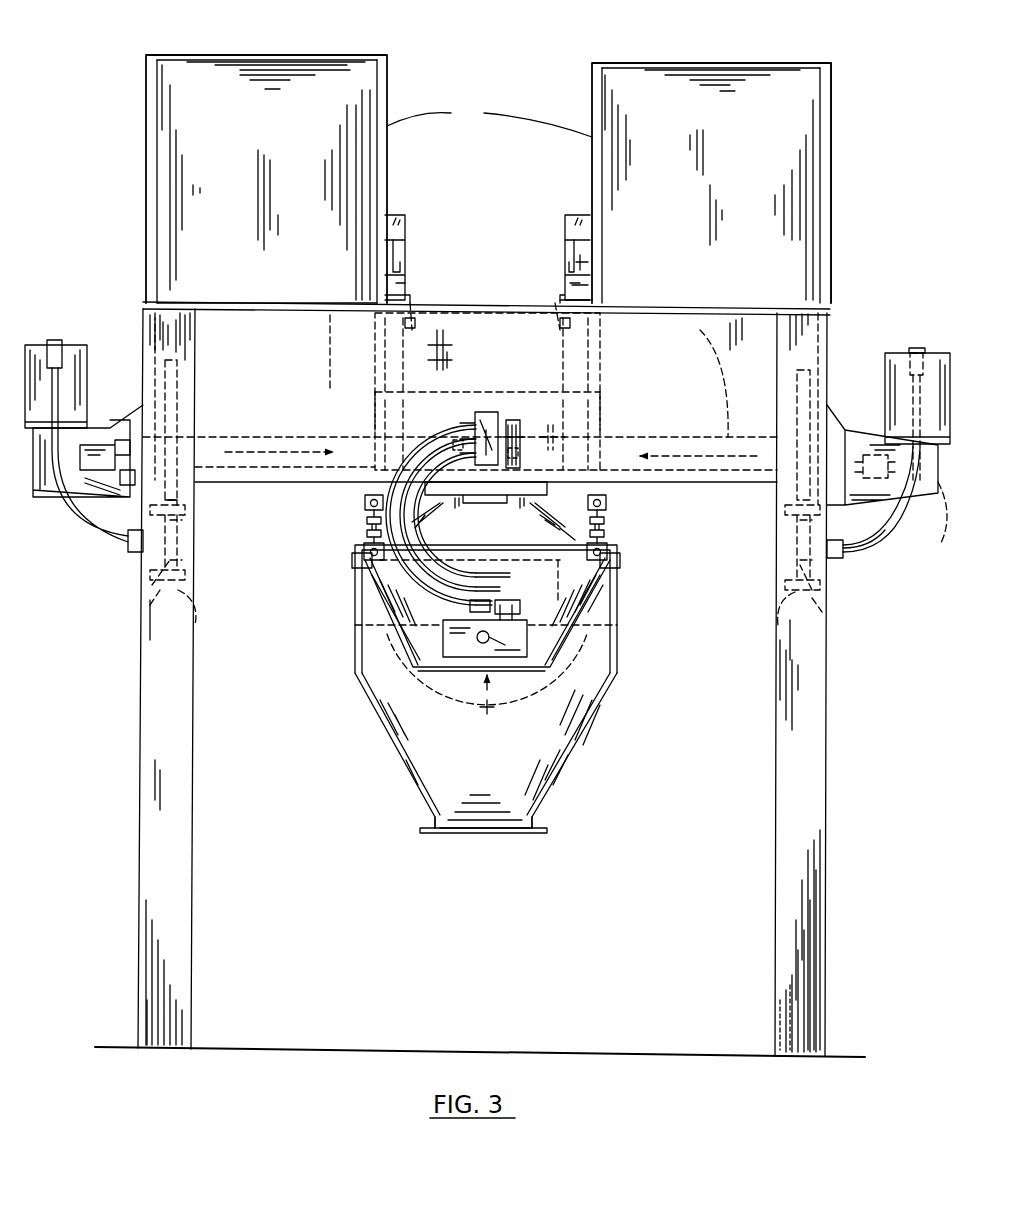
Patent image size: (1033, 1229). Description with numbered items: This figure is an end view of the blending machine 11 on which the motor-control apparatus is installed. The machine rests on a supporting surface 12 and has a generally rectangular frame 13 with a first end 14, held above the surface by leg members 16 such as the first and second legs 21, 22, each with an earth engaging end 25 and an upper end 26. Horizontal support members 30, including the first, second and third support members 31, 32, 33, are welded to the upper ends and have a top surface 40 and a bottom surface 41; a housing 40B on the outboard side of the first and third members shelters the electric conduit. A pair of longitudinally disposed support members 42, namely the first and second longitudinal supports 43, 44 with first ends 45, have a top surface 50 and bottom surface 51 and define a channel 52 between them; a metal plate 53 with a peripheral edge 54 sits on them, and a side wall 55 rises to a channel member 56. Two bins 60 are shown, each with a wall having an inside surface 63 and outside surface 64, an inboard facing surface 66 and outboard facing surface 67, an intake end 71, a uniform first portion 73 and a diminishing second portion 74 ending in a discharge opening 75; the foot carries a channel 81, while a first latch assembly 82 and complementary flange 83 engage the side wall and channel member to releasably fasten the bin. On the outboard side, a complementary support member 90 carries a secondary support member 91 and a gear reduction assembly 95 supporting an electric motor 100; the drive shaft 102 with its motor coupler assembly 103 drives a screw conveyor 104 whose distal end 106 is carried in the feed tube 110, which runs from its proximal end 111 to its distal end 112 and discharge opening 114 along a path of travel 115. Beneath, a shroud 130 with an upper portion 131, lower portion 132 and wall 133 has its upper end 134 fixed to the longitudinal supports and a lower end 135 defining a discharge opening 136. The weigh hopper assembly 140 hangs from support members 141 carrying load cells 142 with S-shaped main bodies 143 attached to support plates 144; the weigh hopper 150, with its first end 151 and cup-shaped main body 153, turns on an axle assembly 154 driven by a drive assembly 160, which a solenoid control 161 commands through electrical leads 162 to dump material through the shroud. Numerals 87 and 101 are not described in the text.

The blending machine 11 is at (836, 187).
The supporting surface 12 is at (447, 1048).
The frame 13 is at (830, 636).
The first end 14 is at (185, 333).
The leg members 16 is at (820, 916).
The first leg 21 is at (175, 933).
The second leg 22 is at (797, 987).
The earth engaging end 25 is at (190, 997).
The upper end 26 is at (160, 322).
The horizontal support members 30 is at (138, 568).
The first support member 31 is at (185, 536).
The second support member 32 is at (312, 303).
The third support member 33 is at (795, 556).
The top surface 40 is at (197, 500).
The housing 40B is at (137, 592).
The bottom surface 41 is at (190, 603).
The longitudinally disposed support members 42 is at (550, 320).
The first longitudinal support 43 is at (400, 340).
The second longitudinal support 44 is at (563, 364).
The first end 45 is at (445, 341).
The top surface 50 is at (412, 303).
The bottom surface 51 is at (382, 395).
The channel 52 is at (455, 360).
The metal plate 53 is at (440, 303).
The peripheral edge 54 is at (580, 300).
The side wall 55 is at (582, 285).
The channel member 56 is at (585, 262).
The bins 60 is at (326, 44).
The inside surface 63 is at (157, 128).
The outside surface 64 is at (146, 108).
The inboard facing surface 66 is at (489, 119).
The outboard facing surface 67 is at (826, 152).
The intake end 71 is at (154, 54).
The first portion 73 is at (242, 75).
The second portion 74 is at (703, 335).
The discharge opening 75 is at (730, 432).
The channel 81 is at (180, 480).
The first latch assembly 82 is at (410, 232).
The complementary flange 83 is at (385, 244).
The drive mechanism 87 is at (101, 483).
The complementary support member 90 is at (847, 428).
The secondary support member 91 is at (870, 543).
The gear reduction assembly 95 is at (42, 458).
The electric motors 100 is at (72, 360).
The cylinder 101 is at (55, 392).
The drive shaft 102 is at (858, 556).
The motor coupler assembly 103 is at (90, 478).
The screw conveyor 104 is at (250, 482).
The distal end 106 is at (488, 512).
The feed tube 110 is at (330, 433).
The proximal end 111 is at (130, 544).
The distal end 112 is at (514, 435).
The discharge opening 114 is at (480, 506).
The paths of travel 115 is at (278, 436).
The shroud 130 is at (352, 682).
The upper portion 131 is at (385, 423).
The lower portion 132 is at (492, 782).
The wall 133 is at (580, 740).
The upper end 134 is at (572, 432).
The lower end 135 is at (530, 820).
The discharge opening 136 is at (464, 840).
The weigh hopper assembly 140 is at (486, 718).
The support members 141 is at (365, 503).
The load cells 142 is at (606, 528).
The S-shaped main body 143 is at (368, 538).
The support plates 144 is at (605, 600).
The weigh hopper 150 is at (362, 640).
The first end 151 is at (520, 589).
The cup-shaped main body 153 is at (412, 683).
The axle assembly 154 is at (545, 672).
The drive assembly 160 is at (467, 645).
The solenoid control 161 is at (486, 430).
The electrical leads 162 is at (405, 578).